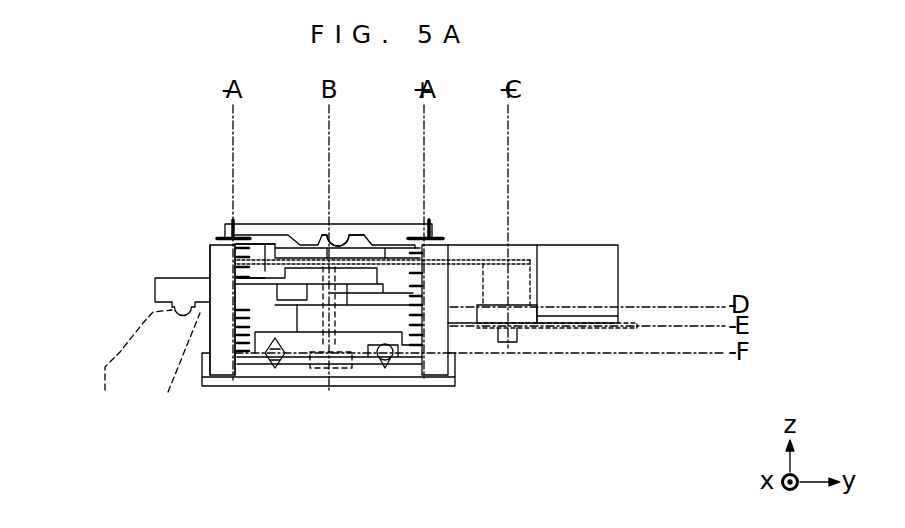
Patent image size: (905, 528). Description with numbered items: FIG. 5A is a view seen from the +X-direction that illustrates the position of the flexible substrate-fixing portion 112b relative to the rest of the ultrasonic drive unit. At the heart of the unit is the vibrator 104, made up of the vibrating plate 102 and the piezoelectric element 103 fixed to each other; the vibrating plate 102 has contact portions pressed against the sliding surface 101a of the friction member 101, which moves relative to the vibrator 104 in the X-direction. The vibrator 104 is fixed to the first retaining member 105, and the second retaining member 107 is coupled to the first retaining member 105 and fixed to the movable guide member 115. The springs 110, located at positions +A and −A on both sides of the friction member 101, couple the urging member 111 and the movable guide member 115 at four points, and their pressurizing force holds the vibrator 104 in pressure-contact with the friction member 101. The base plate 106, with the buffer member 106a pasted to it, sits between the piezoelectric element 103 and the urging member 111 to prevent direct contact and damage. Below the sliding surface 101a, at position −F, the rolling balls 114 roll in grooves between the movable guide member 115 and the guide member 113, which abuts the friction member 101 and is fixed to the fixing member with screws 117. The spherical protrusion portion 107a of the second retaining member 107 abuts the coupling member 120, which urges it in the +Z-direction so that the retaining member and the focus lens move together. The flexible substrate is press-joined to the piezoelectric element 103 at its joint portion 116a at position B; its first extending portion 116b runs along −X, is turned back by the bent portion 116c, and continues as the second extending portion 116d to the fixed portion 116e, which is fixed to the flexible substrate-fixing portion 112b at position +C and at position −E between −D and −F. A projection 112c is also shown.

The friction member 101 is at (210, 265).
The sliding surface 101a is at (212, 250).
The vibrating plate 102 is at (352, 290).
The piezoelectric element 103 is at (368, 300).
The vibrator 104 is at (395, 458).
The first retaining member 105 is at (248, 235).
The base plate 106 is at (339, 242).
The buffer member 106a is at (373, 260).
The second retaining member 107 is at (210, 258).
The spherical protrusion portion 107a is at (180, 318).
The springs 110 is at (222, 238).
The urging member 111 is at (267, 248).
The flexible substrate-fixing portion 112b is at (540, 316).
The holder projection 112c is at (506, 344).
The guide member 113 is at (210, 292).
The rolling balls 114 is at (270, 369).
The movable guide member 115 is at (375, 386).
The joint portion 116a is at (301, 233).
The first extending portion 116b is at (506, 282).
The bent portion 116c is at (537, 282).
The second extending portion 116d is at (522, 328).
The fixed portion 116e is at (557, 391).
The screws 117 is at (345, 352).
The coupling member 120 is at (118, 351).